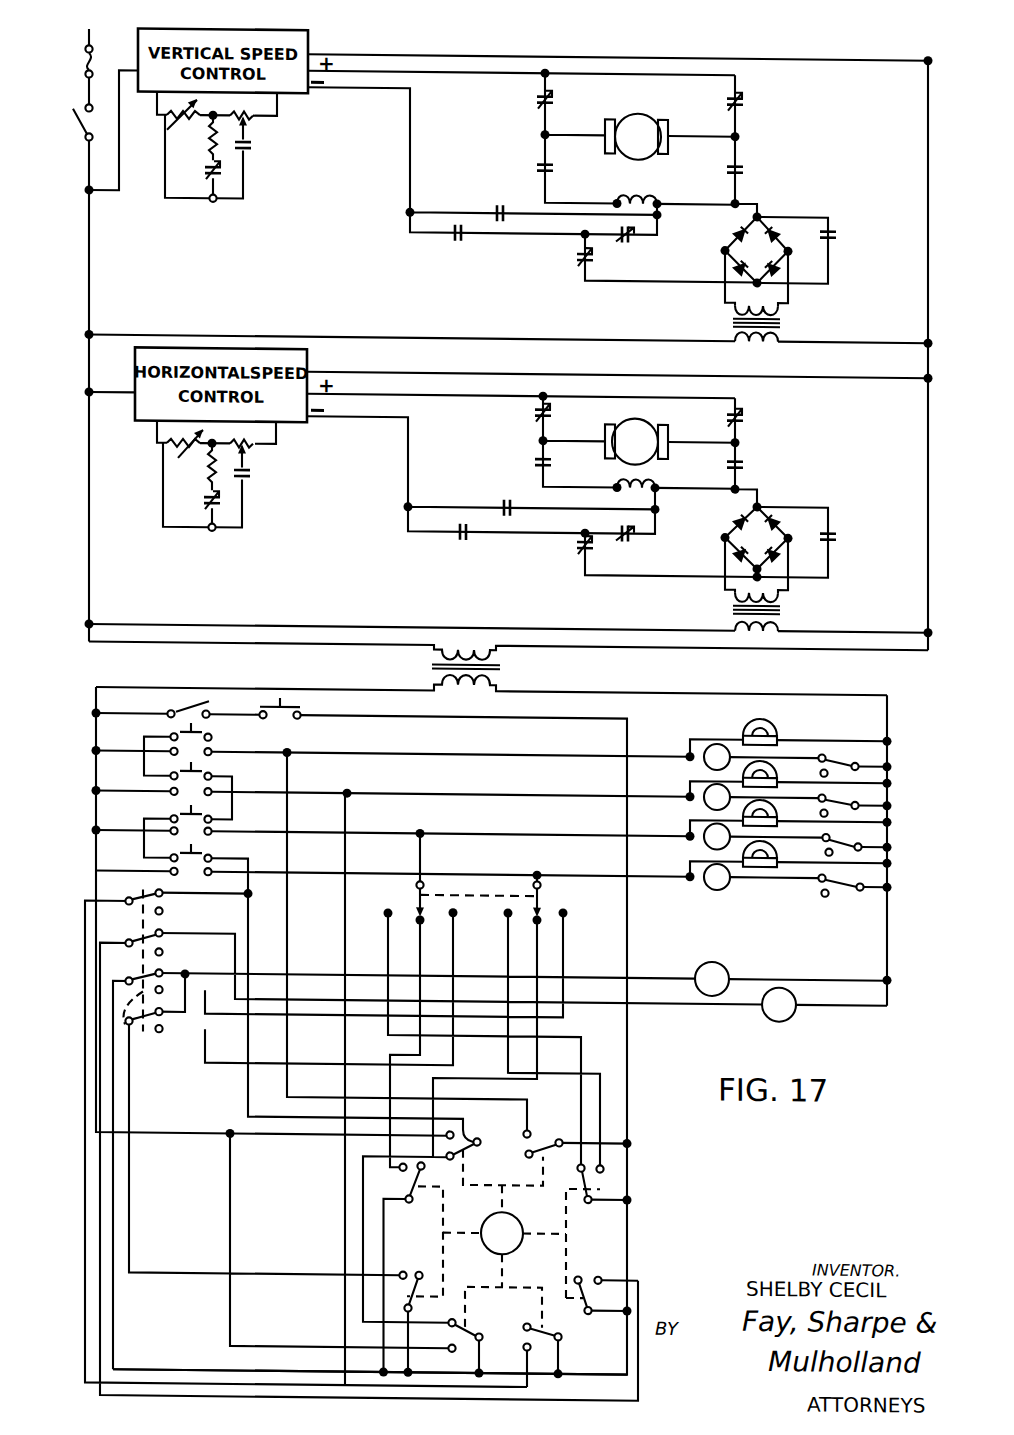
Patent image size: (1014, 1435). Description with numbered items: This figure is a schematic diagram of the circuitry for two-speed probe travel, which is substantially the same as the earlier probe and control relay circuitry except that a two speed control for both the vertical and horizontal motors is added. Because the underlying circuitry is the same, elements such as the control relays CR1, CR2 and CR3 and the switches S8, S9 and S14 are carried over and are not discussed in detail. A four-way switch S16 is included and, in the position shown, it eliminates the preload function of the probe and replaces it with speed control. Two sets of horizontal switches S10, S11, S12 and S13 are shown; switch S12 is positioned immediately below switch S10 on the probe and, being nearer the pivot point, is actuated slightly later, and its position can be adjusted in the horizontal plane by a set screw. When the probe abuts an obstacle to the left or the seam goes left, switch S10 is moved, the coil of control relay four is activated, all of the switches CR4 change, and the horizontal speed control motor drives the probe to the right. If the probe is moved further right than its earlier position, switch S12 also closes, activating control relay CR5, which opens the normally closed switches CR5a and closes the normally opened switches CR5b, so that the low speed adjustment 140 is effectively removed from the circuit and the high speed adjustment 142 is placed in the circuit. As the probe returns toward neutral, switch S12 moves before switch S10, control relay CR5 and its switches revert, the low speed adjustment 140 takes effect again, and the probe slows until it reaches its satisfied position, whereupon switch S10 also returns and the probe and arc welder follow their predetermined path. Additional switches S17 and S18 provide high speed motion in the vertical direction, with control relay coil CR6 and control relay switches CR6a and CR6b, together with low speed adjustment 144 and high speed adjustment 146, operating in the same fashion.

The low speed adjustment 140 is at (178, 456).
The high speed adjustment 142 is at (258, 443).
The low speed adjustment 144 is at (167, 128).
The high speed adjustment 146 is at (257, 115).
The control relay CR1 is at (703, 759).
The control relay CR2 is at (703, 798).
The control relay CR3 is at (703, 838).
The control relay switches CR4 is at (703, 880).
The control relay CR5 is at (718, 953).
The control relay coil CR6 is at (788, 1014).
The normally closed switches CR5a is at (203, 503).
The normally opened switches CR5b is at (247, 478).
The control relay switches CR6a is at (217, 175).
The control relay switches CR6b is at (248, 150).
The switch S8 is at (543, 1149).
The switch S9 is at (557, 1327).
The horizontal switch S10 is at (598, 1188).
The horizontal switch S11 is at (413, 1176).
The horizontal switch S12 is at (592, 1286).
The horizontal switch S13 is at (400, 1268).
The switch S14 is at (463, 885).
The four-way switch S16 is at (132, 1038).
The switch S17 is at (470, 1120).
The switch S18 is at (470, 1318).